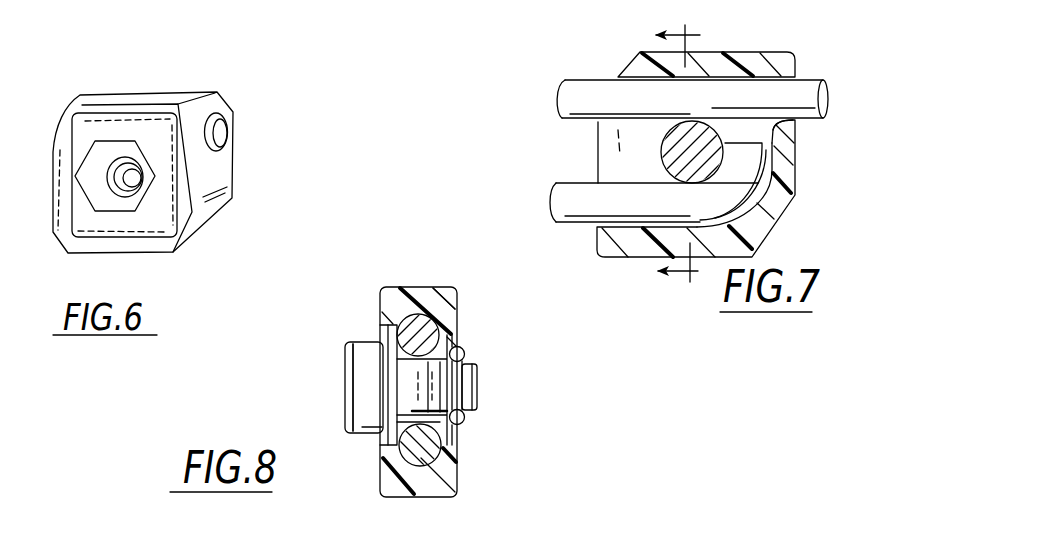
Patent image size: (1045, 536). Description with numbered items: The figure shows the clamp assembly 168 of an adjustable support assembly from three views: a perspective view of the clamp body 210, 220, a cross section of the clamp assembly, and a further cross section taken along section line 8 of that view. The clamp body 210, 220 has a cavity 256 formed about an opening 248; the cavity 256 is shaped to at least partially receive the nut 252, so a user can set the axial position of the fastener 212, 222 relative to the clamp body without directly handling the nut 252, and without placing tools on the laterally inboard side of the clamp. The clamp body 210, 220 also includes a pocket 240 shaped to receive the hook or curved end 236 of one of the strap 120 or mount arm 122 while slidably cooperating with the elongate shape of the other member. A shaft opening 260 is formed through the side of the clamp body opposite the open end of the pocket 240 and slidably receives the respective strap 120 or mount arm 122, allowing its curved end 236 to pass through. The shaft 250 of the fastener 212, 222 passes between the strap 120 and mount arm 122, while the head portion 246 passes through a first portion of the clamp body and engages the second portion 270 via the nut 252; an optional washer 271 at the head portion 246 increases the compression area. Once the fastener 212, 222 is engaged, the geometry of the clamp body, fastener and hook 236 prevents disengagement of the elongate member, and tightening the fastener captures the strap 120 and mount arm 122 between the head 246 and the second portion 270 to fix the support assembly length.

In FIG. 7, the section line 8- 8 is at (678, 156).
In FIG. 7, the strap 120 is at (671, 168).
In FIG. 8, the strap 120 is at (425, 335).
In FIG. 7, the mount arm 122 is at (595, 65).
In FIG. 8, the clamp assembly 168 is at (405, 359).
In FIG. 6, the clamp body 210 is at (143, 139).
In FIG. 7, the clamp body 210 is at (727, 134).
In FIG. 8, the clamp body 210 is at (405, 359).
In FIG. 8, the fastener 212 is at (326, 367).
In FIG. 6, the clamp body 220 is at (152, 92).
In FIG. 7, the clamp body 220 is at (757, 58).
In FIG. 8, the clamp body 220 is at (460, 253).
In FIG. 8, the fastener 222 is at (360, 347).
In FIG. 7, the hook or curved end 236 is at (735, 188).
In FIG. 7, the pocket 240 is at (578, 137).
In FIG. 8, the head portion 246 is at (363, 382).
In FIG. 6, the opening 248 is at (112, 163).
In FIG. 7, the shaft 250 is at (668, 153).
In FIG. 8, the shaft 250 is at (477, 375).
In FIG. 8, the nut 252 is at (455, 422).
In FIG. 6, the cavity 256 is at (110, 208).
In FIG. 7, the shaft opening 260 is at (795, 120).
In FIG. 8, the second portion 270 is at (458, 287).
In FIG. 8, the washer 271 is at (380, 443).